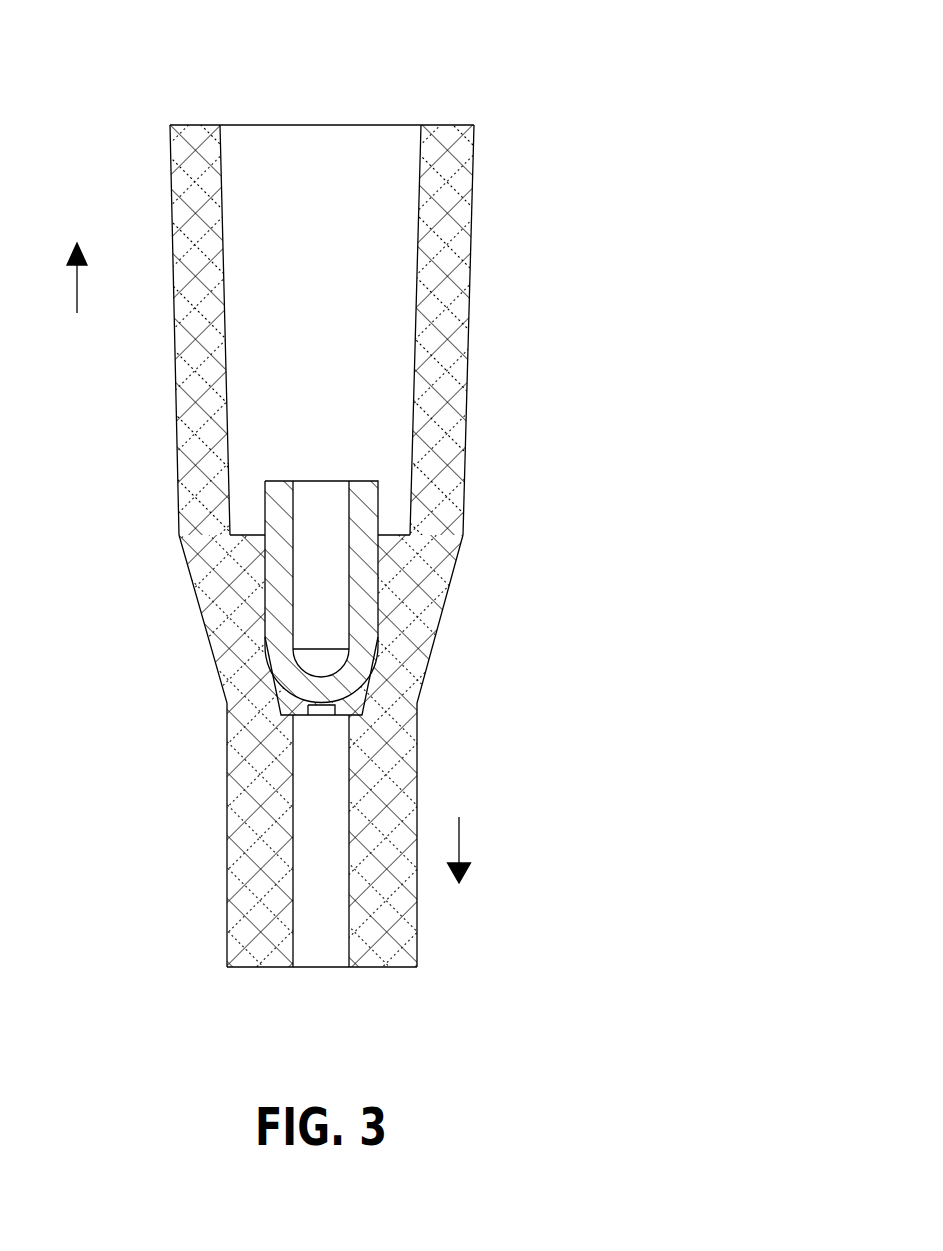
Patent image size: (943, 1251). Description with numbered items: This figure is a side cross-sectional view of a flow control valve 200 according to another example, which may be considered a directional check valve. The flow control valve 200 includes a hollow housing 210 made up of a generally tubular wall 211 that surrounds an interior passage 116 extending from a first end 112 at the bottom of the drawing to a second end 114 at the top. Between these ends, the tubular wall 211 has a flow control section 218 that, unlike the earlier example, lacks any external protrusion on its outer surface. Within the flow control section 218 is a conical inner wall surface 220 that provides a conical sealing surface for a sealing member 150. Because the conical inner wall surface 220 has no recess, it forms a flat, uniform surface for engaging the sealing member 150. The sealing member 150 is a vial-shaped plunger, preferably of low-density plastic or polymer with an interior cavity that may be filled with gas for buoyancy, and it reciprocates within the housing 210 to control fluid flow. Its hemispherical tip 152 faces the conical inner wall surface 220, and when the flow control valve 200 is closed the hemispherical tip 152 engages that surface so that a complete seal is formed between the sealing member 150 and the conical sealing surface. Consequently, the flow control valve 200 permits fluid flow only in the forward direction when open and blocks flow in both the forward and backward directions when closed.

The flow control valve 200 is at (333, 537).
The second end 114 is at (170, 129).
The interior passage 116 is at (347, 274).
The housing 210 is at (474, 205).
The tubular wall 211 is at (460, 300).
The sealing member 150 is at (447, 610).
The hemispherical tip 152 is at (340, 687).
The flow control section 218 is at (443, 615).
The conical inner wall surface 220 is at (263, 656).
The first end 112 is at (440, 988).